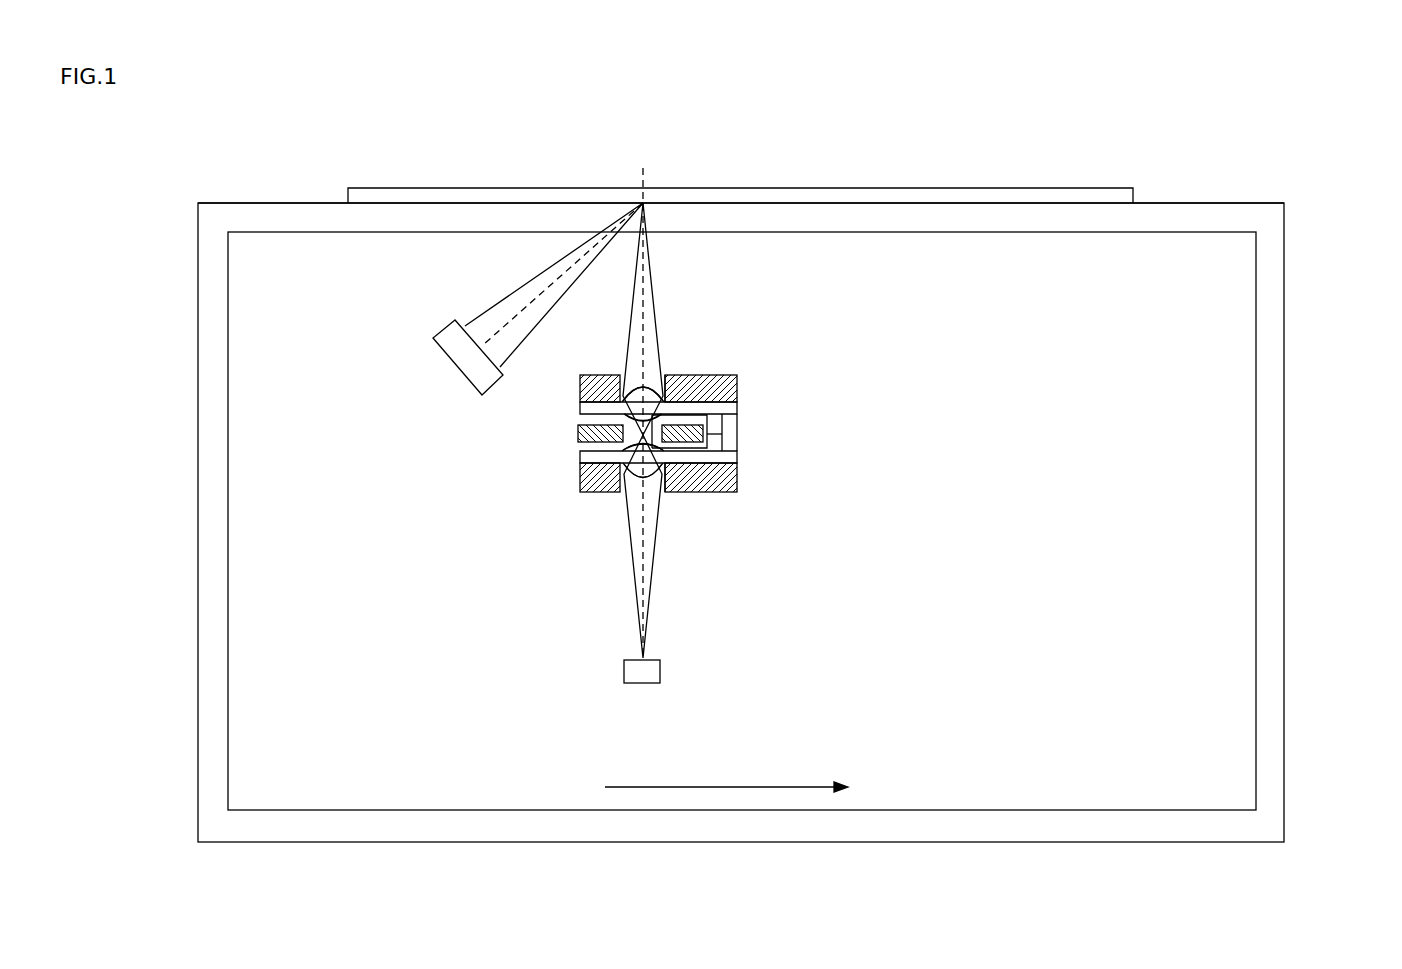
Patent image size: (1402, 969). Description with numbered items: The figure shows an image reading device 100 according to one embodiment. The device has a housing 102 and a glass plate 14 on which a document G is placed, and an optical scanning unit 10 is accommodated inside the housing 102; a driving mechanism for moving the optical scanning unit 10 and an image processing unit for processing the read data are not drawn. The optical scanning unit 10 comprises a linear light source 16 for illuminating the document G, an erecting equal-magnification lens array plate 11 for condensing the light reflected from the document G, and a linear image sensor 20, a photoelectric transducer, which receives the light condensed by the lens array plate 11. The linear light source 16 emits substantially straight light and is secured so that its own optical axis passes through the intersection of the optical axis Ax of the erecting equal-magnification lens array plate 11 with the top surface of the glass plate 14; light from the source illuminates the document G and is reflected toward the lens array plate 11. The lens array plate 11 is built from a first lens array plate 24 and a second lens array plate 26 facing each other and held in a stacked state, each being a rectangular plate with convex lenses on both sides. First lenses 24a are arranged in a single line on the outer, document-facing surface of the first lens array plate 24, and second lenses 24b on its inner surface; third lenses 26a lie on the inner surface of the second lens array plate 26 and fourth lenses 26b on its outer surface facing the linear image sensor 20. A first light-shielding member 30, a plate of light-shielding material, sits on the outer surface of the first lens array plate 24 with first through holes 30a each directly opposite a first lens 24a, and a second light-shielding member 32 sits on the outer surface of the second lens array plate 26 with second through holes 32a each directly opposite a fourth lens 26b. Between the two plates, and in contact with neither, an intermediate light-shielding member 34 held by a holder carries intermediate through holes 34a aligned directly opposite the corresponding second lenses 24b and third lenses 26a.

The image reading device 100 is at (1199, 148).
The housing 102 is at (1284, 368).
The glass plate 14 is at (308, 215).
The document G is at (430, 188).
The optical axis Ax is at (643, 399).
The optical scanning unit 10 is at (768, 331).
The erecting equal-magnification lens array plate 11 is at (698, 372).
The linear light source 16 is at (453, 365).
The linear image sensor 20 is at (662, 672).
The first lens array plate 24 is at (740, 408).
The first lenses 24a is at (630, 386).
The second lenses 24b is at (627, 419).
The second lens array plate 26 is at (740, 458).
The third lenses 26a is at (627, 446).
The fourth lenses 26b is at (630, 487).
The first light-shielding member 30 is at (740, 385).
The first through holes 30a is at (656, 386).
The second light-shielding member 32 is at (727, 493).
The second through holes 32a is at (657, 489).
The intermediate light-shielding member 34 is at (578, 433).
The intermediate through holes 34a is at (653, 441).